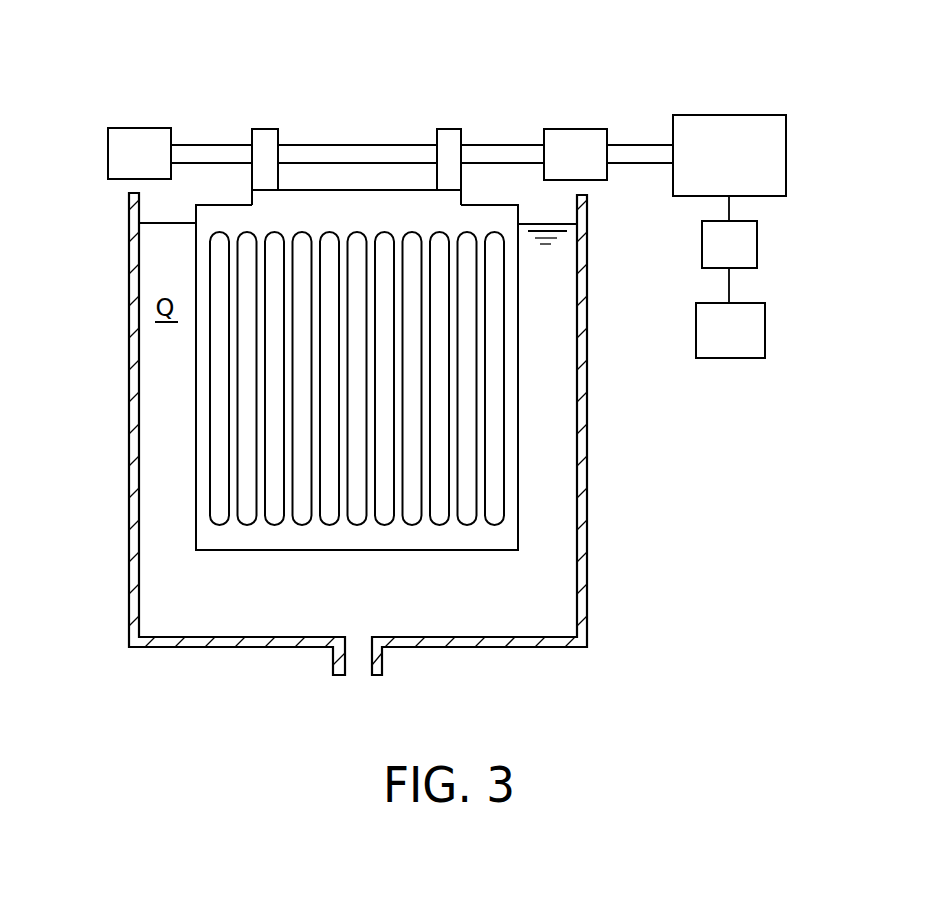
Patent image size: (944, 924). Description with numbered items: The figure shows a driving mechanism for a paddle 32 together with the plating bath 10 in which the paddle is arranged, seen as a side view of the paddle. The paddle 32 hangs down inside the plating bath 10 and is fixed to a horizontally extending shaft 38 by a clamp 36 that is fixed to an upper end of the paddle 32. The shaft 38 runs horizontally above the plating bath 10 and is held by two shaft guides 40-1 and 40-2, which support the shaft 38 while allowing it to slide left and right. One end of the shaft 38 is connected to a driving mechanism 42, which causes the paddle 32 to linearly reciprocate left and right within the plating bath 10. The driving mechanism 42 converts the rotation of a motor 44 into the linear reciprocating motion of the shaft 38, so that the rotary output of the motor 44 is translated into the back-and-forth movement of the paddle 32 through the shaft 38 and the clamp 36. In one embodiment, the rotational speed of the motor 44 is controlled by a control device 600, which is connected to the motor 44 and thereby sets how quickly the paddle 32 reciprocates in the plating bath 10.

The plating bath 10 is at (587, 446).
The paddle 32 is at (188, 418).
The clamp 36 is at (263, 128).
The shaft 38 is at (357, 145).
The shaft guide 40-1 is at (576, 138).
The shaft guide 40-2 is at (139, 138).
The driving mechanism 42 is at (737, 115).
The motor 44 is at (757, 243).
The control device 600 is at (765, 328).